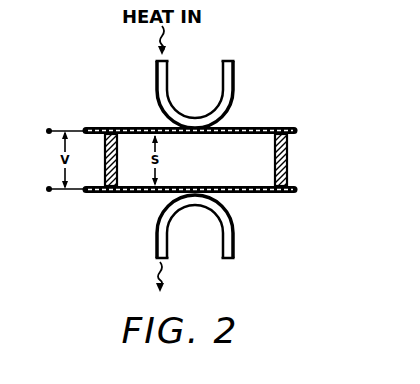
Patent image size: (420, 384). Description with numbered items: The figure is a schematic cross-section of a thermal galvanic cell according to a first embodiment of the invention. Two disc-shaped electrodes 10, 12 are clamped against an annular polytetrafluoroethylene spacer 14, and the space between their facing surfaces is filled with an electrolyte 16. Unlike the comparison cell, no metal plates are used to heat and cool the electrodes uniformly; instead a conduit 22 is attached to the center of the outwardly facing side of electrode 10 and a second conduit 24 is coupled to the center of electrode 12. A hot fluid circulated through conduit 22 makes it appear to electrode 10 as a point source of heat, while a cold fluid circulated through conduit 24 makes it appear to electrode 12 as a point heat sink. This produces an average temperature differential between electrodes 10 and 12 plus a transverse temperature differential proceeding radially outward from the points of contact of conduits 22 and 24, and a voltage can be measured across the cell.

The electrode 10 is at (290, 128).
The electrode 12 is at (290, 191).
The annular polytetrafluoroethylene spacer 14 is at (287, 163).
The electrolyte 16 is at (120, 165).
The conduit 22 is at (233, 97).
The second conduit 24 is at (233, 225).